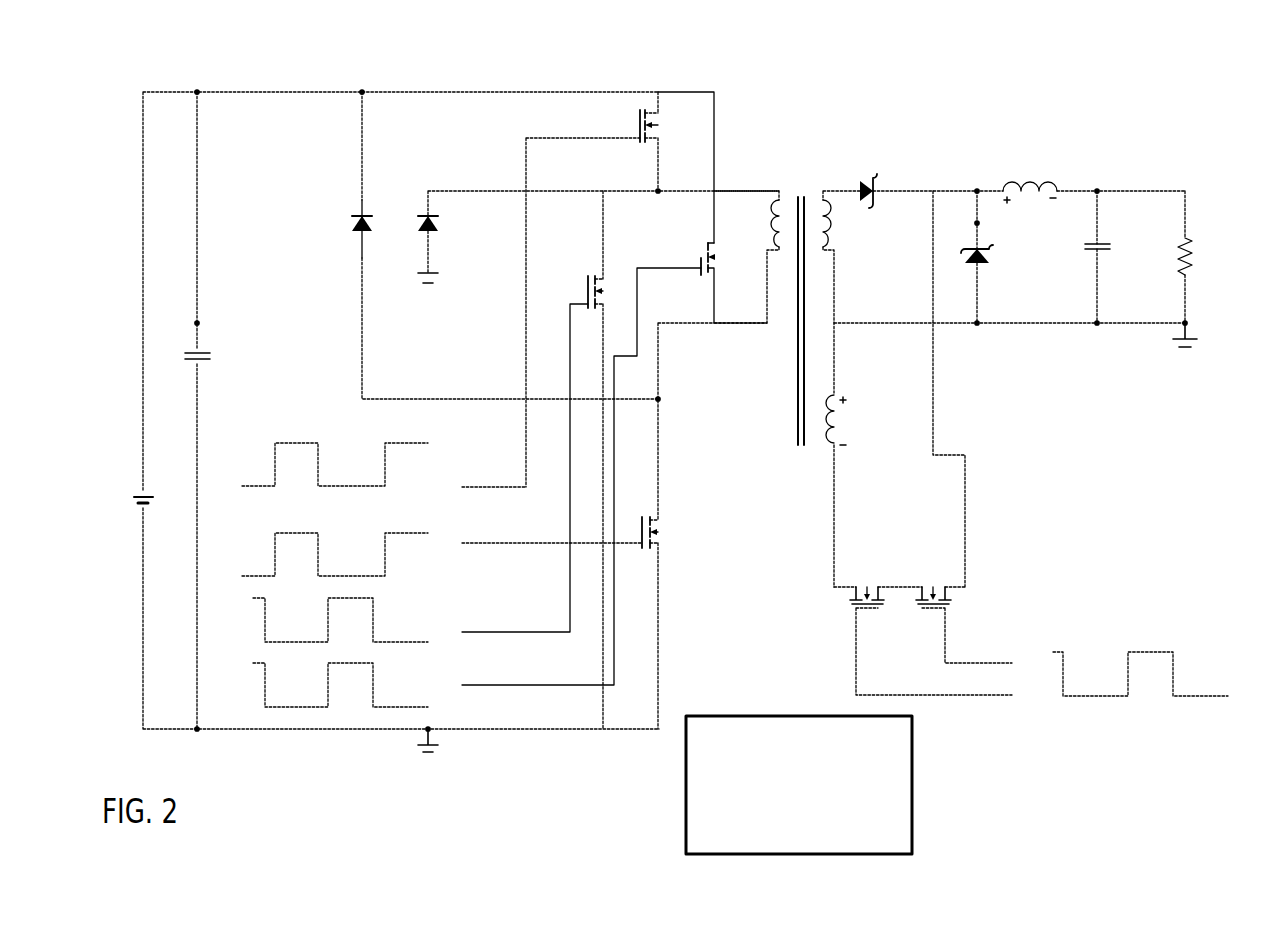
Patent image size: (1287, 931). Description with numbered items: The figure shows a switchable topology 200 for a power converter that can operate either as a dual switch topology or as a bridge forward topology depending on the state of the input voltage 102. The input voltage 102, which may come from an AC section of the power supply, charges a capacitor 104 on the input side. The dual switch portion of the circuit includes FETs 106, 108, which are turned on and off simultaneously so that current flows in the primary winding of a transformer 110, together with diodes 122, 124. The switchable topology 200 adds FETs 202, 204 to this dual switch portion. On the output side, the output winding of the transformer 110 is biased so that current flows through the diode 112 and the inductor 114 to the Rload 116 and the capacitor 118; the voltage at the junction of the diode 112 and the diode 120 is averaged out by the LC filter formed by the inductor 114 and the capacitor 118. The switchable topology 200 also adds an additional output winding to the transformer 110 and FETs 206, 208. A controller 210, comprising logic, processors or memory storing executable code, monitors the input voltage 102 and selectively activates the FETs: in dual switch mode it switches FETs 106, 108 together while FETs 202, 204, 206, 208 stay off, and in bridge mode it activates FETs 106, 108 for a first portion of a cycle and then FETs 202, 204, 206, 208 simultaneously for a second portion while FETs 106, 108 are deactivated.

The switchable topology 200 is at (308, 111).
The input voltage 102 is at (118, 500).
The capacitor 104 is at (256, 360).
The FET 106 is at (708, 533).
The FET 108 is at (703, 135).
The transformer 110 is at (815, 153).
The diode 112 is at (885, 153).
The inductor 114 is at (1054, 153).
The Rload 116 is at (1238, 258).
The capacitor 118 is at (1072, 238).
The diode 120 is at (1023, 291).
The diode 122 is at (486, 221).
The diode 124 is at (336, 221).
The FET 202 is at (690, 255).
The FET 204 is at (586, 255).
The FET 206 is at (885, 573).
The FET 208 is at (943, 573).
The controller 210 is at (847, 794).